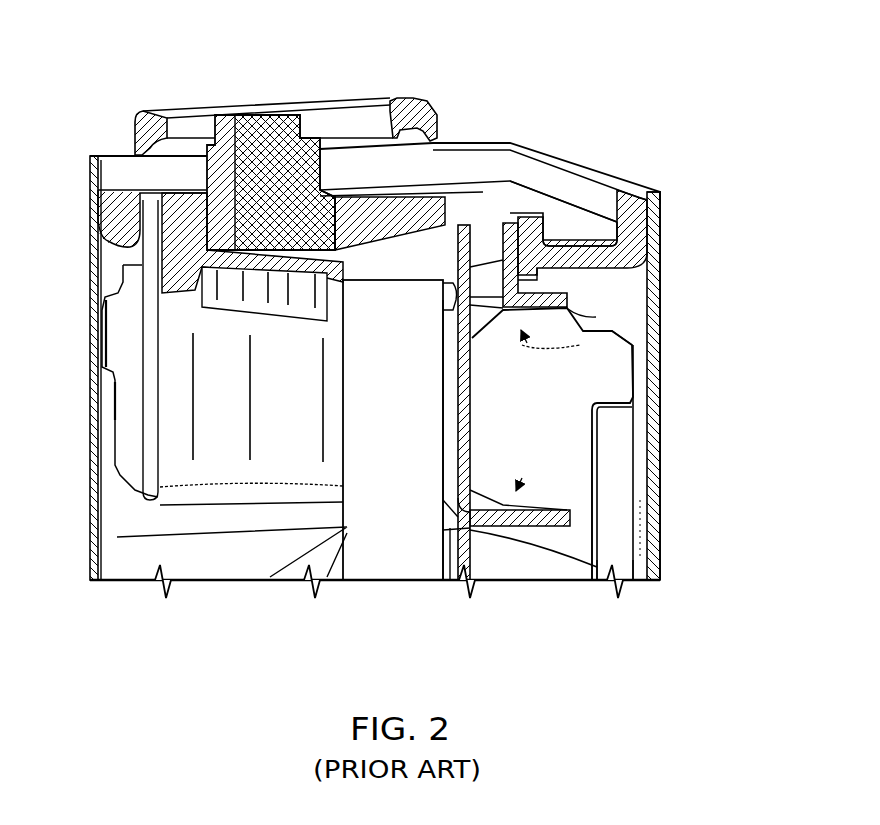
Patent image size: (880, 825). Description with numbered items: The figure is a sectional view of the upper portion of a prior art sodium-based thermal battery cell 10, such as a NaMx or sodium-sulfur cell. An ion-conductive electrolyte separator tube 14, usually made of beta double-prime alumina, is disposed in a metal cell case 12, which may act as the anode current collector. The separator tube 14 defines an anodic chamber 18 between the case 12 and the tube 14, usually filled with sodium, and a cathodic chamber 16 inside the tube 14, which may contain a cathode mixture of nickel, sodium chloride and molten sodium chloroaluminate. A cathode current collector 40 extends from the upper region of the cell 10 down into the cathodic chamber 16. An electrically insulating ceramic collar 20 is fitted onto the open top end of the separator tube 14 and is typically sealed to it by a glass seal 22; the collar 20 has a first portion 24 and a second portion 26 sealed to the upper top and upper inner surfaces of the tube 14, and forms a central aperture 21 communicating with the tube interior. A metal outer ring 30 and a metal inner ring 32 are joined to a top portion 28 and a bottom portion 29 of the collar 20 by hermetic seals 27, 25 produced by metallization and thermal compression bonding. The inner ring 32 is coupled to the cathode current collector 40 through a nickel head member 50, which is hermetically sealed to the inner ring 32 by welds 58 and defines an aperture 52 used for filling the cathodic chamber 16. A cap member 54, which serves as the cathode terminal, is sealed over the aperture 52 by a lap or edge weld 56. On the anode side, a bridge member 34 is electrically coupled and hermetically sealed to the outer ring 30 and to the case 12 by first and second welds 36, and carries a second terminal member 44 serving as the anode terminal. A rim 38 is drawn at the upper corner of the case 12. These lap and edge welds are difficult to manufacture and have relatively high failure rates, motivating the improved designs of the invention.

The sodium-based thermal battery cell 10 is at (116, 46).
The metal cell case 12 is at (655, 400).
The electrolyte separator tube 14 is at (611, 548).
The cathodic chamber 16 is at (224, 566).
The anodic chamber 18 is at (640, 566).
The electrically insulating collar 20 is at (560, 388).
The central aperture 21 is at (456, 418).
The glass seal 22 is at (625, 385).
The first portion 24 is at (623, 398).
The hermetic seal 25 is at (547, 505).
The second portion 26 is at (590, 445).
The hermetic seal 27 is at (603, 317).
The top portion 28 is at (580, 345).
The bottom portion 29 is at (527, 476).
The metal outer ring 30 is at (483, 233).
The metal inner ring 32 is at (470, 530).
The bridge member 34 is at (582, 237).
The welds 36 is at (528, 213).
The rim 38 is at (662, 197).
The cathode current collector 40 is at (404, 380).
The second terminal member 44 is at (188, 108).
The head member 50 is at (412, 165).
The aperture 52 is at (200, 303).
The cap member 54 is at (266, 113).
The weld 56 is at (280, 140).
The welds 58 is at (387, 263).